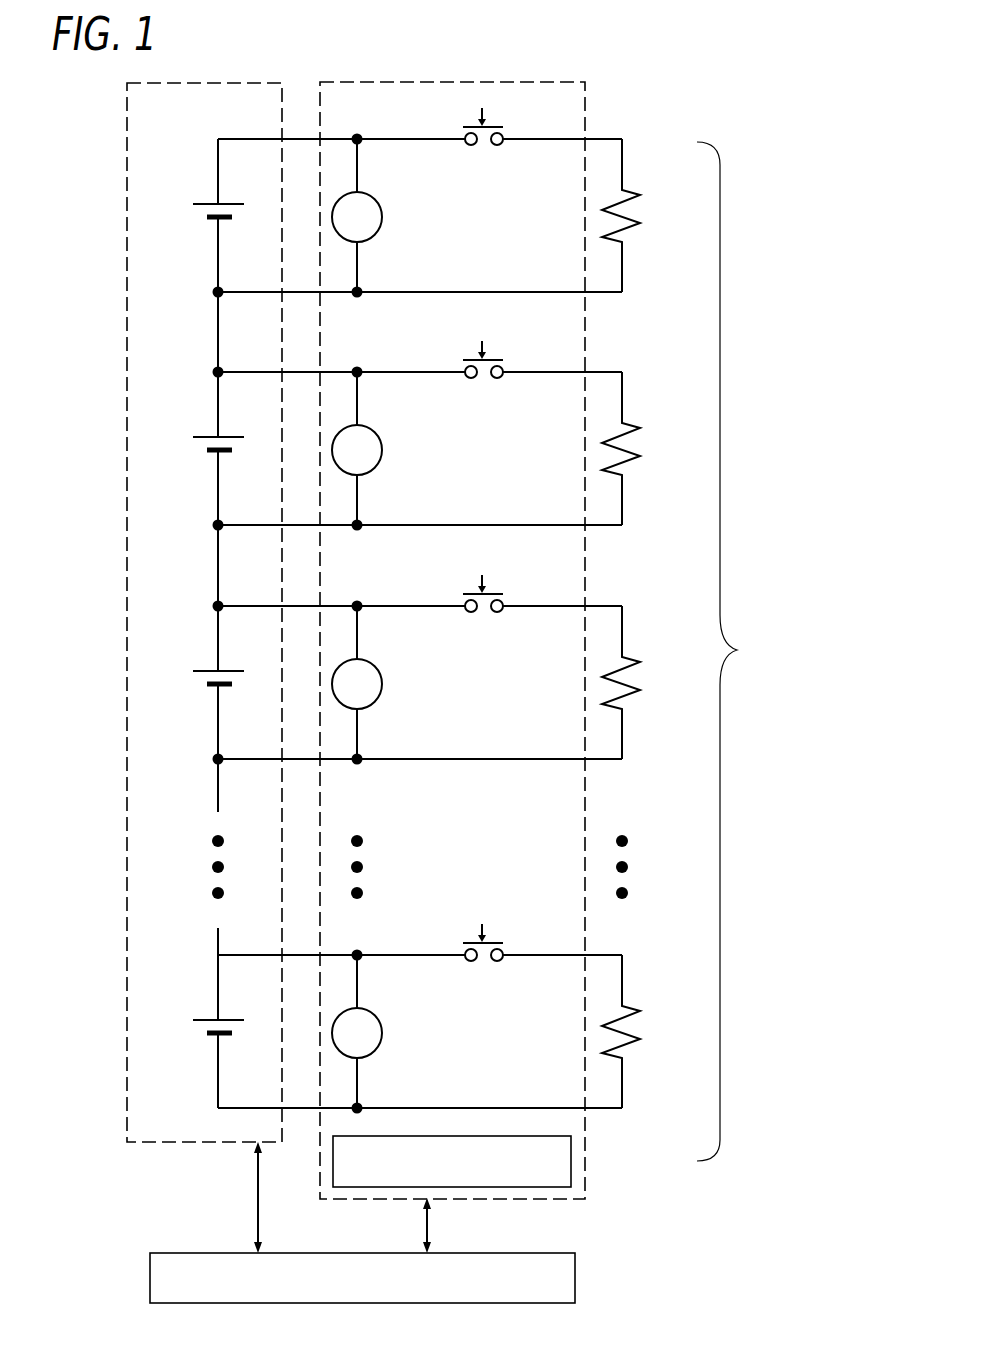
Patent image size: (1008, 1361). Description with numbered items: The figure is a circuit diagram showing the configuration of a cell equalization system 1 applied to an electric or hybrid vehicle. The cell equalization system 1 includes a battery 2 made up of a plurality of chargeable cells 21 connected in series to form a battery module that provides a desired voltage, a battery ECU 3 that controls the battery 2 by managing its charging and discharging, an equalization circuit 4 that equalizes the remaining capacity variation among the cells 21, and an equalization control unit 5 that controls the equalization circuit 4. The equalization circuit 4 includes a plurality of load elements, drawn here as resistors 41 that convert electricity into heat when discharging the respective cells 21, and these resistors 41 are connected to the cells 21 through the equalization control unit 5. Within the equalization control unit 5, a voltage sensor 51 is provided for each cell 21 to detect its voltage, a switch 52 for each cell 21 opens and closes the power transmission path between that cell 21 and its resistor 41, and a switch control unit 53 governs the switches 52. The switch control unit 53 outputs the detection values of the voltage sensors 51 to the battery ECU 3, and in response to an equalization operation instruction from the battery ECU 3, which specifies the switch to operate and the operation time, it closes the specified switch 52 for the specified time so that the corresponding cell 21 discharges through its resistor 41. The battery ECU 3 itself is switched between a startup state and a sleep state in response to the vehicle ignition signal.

The cell equalization system 1 is at (770, 143).
The battery 2 is at (211, 1145).
The cell 21 is at (203, 242).
The battery ECU 3 is at (575, 1280).
The equalization circuit 4 is at (741, 651).
The resistor 41 is at (646, 181).
The equalization control unit 5 is at (587, 1190).
The voltage sensor 51 is at (380, 205).
The switch 52 is at (512, 111).
The switch control unit 53 is at (572, 1155).